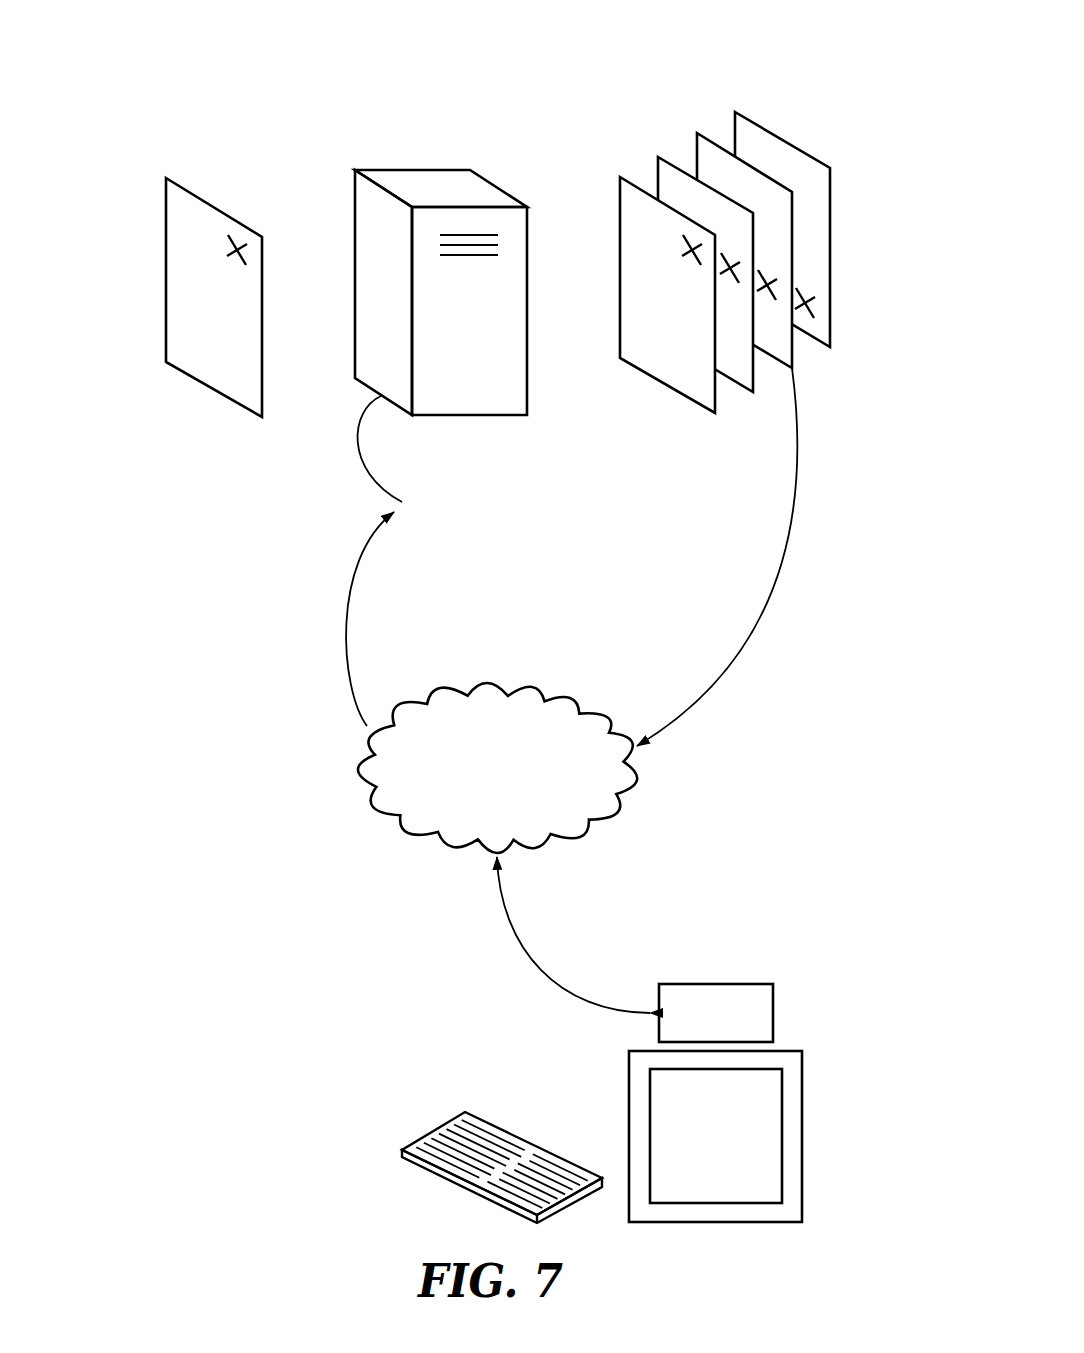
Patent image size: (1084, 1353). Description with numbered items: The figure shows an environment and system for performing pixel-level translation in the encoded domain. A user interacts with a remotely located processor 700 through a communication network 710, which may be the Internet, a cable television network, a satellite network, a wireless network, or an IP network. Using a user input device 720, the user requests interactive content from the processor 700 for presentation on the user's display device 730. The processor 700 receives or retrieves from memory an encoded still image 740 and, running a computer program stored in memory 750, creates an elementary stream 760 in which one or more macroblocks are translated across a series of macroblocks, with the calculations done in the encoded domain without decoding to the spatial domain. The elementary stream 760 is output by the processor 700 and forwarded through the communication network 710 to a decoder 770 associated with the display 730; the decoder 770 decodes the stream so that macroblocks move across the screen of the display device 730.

The processor 700 is at (490, 348).
The communication network 710 is at (519, 808).
The user input device 720 is at (415, 1138).
The display device 730 is at (803, 1085).
The encoded still image 740 is at (177, 110).
The memory 750 is at (551, 501).
The elementary stream 760 is at (830, 230).
The decoder 770 is at (773, 988).